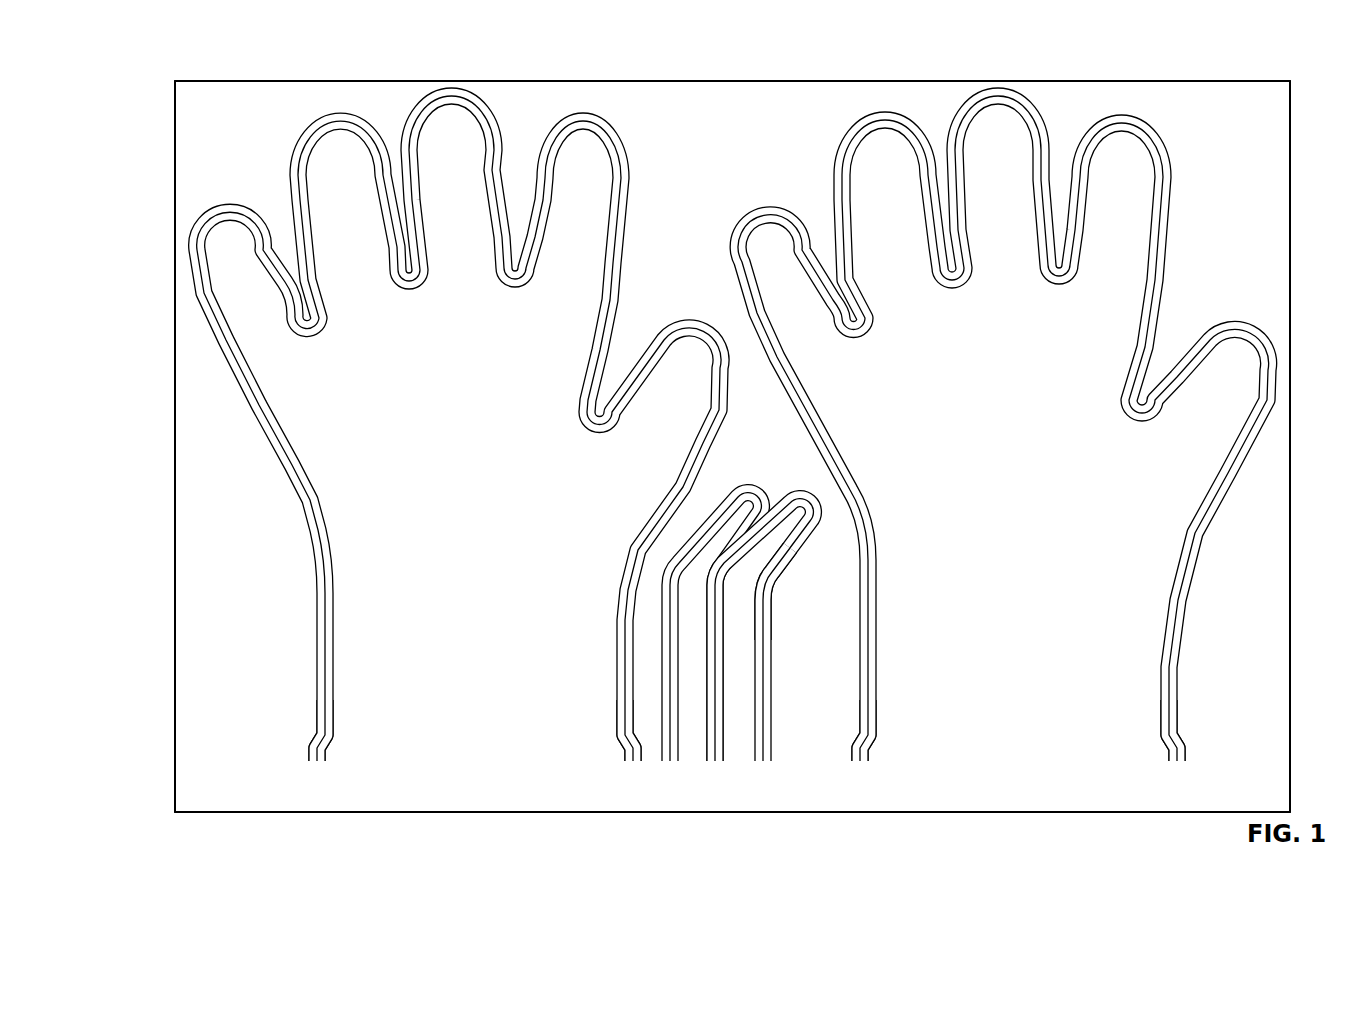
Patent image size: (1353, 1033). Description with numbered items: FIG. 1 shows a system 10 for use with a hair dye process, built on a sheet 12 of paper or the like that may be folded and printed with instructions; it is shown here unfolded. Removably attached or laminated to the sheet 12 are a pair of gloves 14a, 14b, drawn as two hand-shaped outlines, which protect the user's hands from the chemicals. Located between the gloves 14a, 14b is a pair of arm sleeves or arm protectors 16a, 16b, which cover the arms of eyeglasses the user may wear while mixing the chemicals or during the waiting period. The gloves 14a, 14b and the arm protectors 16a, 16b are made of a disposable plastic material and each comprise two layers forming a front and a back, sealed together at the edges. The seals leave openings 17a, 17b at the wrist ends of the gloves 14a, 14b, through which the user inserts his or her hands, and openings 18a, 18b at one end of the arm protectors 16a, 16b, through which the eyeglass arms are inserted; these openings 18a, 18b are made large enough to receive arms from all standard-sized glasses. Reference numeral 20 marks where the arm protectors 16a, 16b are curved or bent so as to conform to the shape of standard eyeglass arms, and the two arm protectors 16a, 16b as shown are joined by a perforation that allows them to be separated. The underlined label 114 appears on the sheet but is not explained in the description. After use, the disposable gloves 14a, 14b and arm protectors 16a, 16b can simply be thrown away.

The system 10 is at (190, 58).
The sheet 12 is at (276, 81).
The glove 14a is at (598, 212).
The glove 14b is at (865, 205).
The arm protector 16a is at (754, 507).
The arm protector 16b is at (805, 513).
The opening 17a is at (448, 748).
The opening 17b is at (957, 750).
The opening 18a is at (700, 747).
The opening 18b is at (742, 748).
The bend 20 is at (772, 596).
The panel 114 is at (1186, 70).